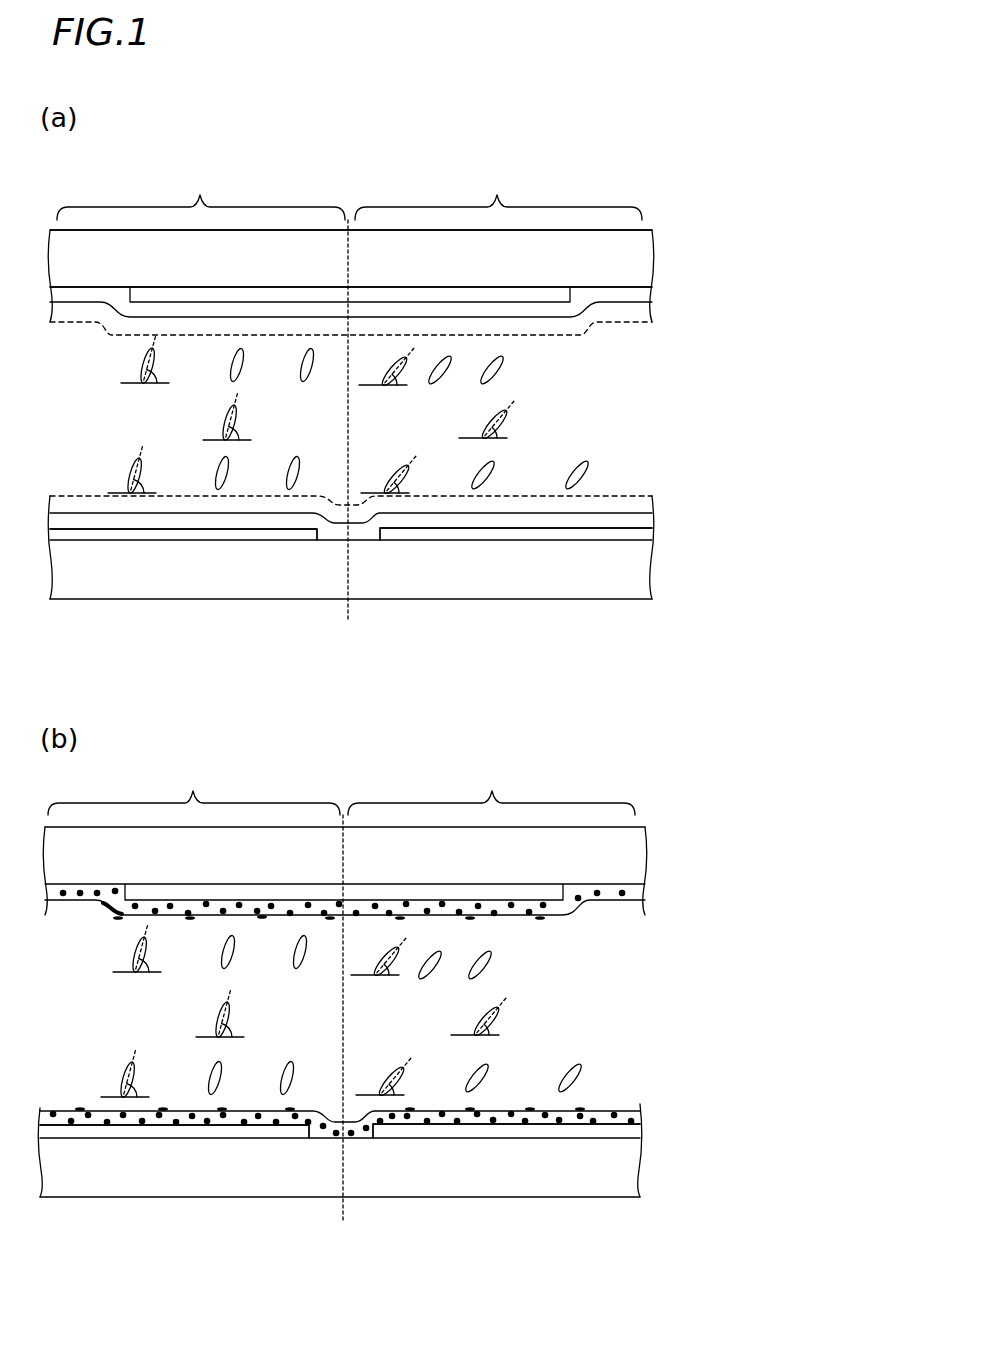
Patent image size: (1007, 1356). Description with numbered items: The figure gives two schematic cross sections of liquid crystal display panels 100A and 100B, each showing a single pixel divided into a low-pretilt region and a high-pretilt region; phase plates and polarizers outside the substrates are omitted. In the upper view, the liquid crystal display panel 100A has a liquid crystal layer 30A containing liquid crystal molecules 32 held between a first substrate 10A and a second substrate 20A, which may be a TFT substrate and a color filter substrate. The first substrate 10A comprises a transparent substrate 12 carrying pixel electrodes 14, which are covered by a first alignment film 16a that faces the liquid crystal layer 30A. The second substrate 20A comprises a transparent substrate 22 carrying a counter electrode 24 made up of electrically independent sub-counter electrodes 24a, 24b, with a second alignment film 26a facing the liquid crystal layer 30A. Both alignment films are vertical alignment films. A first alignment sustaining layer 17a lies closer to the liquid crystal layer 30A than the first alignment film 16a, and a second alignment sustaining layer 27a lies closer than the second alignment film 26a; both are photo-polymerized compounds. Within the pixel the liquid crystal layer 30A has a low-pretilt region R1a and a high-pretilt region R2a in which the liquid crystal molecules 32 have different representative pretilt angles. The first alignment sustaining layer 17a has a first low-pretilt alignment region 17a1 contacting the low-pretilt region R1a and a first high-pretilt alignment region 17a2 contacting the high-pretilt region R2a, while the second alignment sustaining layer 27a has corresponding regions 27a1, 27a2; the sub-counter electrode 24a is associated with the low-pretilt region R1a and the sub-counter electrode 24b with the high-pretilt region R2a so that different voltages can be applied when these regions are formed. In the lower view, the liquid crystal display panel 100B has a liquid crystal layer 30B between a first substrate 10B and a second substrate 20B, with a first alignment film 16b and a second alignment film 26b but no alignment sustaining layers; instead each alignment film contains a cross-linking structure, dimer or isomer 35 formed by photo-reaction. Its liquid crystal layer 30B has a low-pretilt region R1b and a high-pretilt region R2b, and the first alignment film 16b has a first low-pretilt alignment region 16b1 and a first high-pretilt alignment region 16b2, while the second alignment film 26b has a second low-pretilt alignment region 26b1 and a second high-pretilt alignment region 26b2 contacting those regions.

The liquid crystal display panel 100A is at (683, 213).
The liquid crystal display panel 100B is at (675, 811).
The first substrate 10A is at (758, 240).
The first substrate 10B is at (753, 838).
The transparent substrate 12 is at (632, 268).
The pixel electrodes 14 is at (563, 300).
The first alignment film 16a is at (655, 308).
The first alignment film 16b is at (650, 908).
The first low-pretilt alignment region 16b1 is at (566, 912).
The first high-pretilt alignment region 16b2 is at (127, 916).
The first alignment sustaining layer 17a is at (536, 332).
The first low-pretilt alignment region 17a1 is at (592, 337).
The first high-pretilt alignment region 17a2 is at (100, 337).
The second substrate 20A is at (756, 520).
The second substrate 20B is at (750, 1120).
The transparent substrate 22 is at (650, 580).
The counter electrode 24 is at (650, 536).
The sub-counter electrode 24a is at (467, 537).
The sub-counter electrode 24b is at (223, 533).
The second alignment film 26a is at (648, 520).
The second alignment film 26b is at (392, 1089).
The second low-pretilt alignment region 26b1 is at (607, 1110).
The second high-pretilt alignment region 26b2 is at (50, 1110).
The second alignment sustaining layer 27a is at (587, 507).
The second low-pretilt alignment region 27a1 is at (631, 496).
The second high-pretilt alignment region 27a2 is at (60, 493).
The liquid crystal layer 30A is at (647, 413).
The liquid crystal layer 30B is at (640, 1011).
The liquid crystal molecules 32 is at (222, 424).
The cross-linking structure, dimer or isomer 35 is at (580, 1107).
The low-pretilt region R1a is at (498, 194).
The high-pretilt region R2a is at (201, 194).
The low-pretilt region R1b is at (491, 789).
The high-pretilt region R2b is at (194, 789).